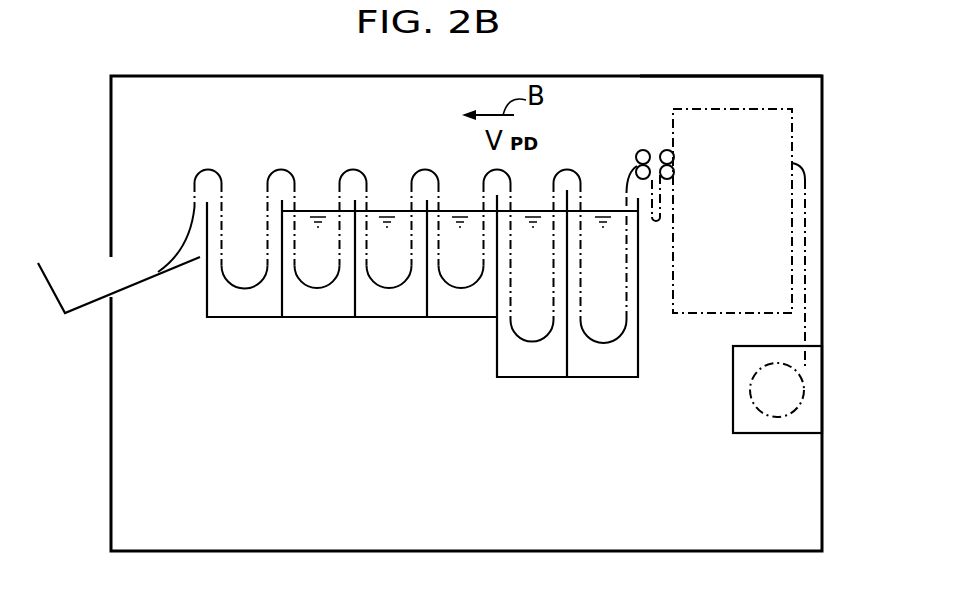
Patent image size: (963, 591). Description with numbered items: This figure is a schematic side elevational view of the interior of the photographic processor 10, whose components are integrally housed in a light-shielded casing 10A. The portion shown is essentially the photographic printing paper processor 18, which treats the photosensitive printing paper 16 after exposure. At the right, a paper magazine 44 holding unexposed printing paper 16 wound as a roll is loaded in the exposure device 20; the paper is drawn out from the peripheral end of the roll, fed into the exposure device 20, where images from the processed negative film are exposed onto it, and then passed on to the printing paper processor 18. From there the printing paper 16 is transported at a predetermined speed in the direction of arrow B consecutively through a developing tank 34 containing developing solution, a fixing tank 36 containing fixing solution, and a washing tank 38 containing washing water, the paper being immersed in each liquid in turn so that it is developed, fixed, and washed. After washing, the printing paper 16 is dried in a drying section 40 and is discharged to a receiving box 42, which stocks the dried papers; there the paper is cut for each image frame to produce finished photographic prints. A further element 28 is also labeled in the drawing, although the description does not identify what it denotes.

The photographic processor 10 is at (614, 56).
The casing 10A is at (683, 75).
The printing paper 16 is at (223, 178).
The photographic printing paper processor 18 is at (328, 100).
The exposure device 20 is at (792, 138).
The upstream section 28 is at (240, 7).
The developing tank 34 is at (540, 367).
The fixing tank 36 is at (443, 311).
The washing tank 38 is at (333, 311).
The drying section 40 is at (259, 300).
The receiving box 42 is at (148, 208).
The paper magazine 44 is at (755, 436).